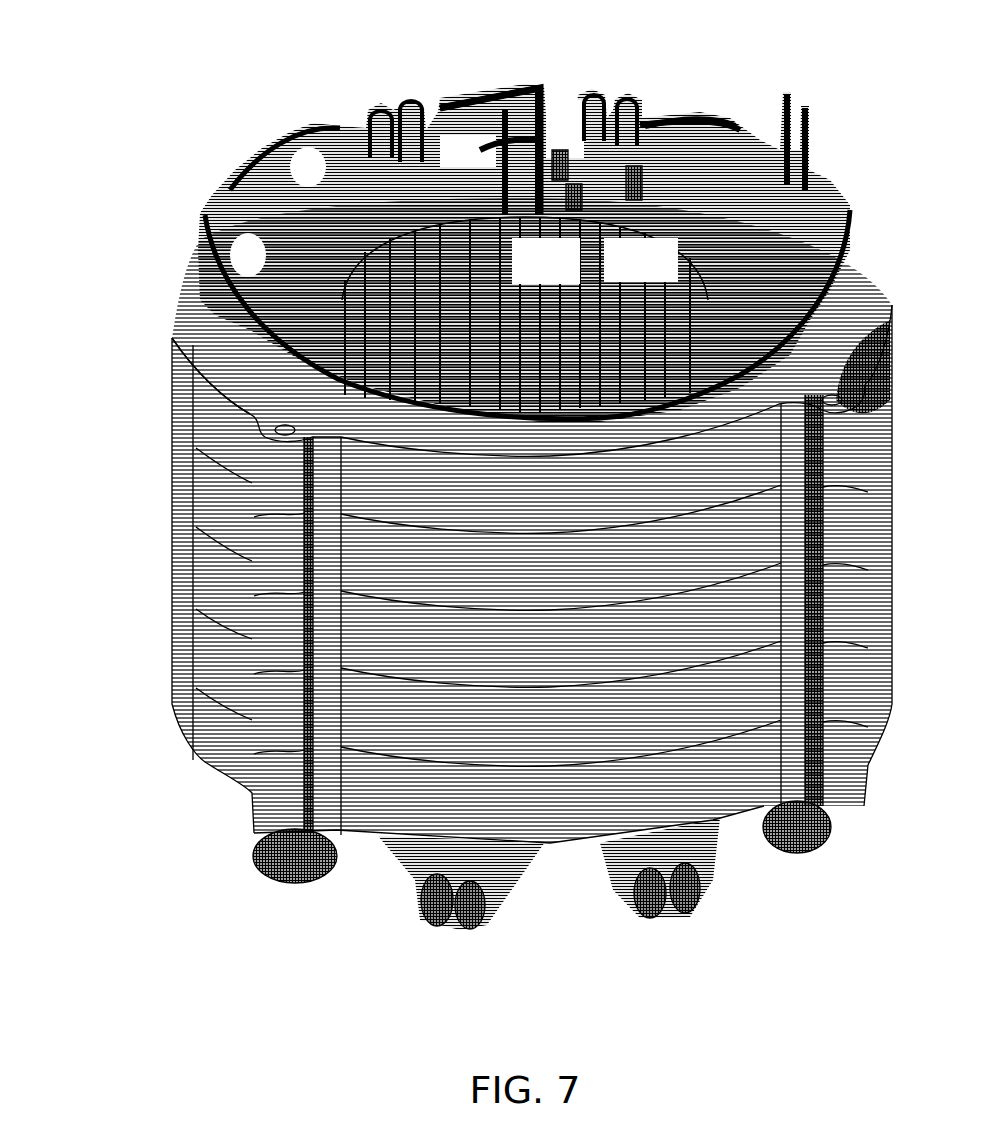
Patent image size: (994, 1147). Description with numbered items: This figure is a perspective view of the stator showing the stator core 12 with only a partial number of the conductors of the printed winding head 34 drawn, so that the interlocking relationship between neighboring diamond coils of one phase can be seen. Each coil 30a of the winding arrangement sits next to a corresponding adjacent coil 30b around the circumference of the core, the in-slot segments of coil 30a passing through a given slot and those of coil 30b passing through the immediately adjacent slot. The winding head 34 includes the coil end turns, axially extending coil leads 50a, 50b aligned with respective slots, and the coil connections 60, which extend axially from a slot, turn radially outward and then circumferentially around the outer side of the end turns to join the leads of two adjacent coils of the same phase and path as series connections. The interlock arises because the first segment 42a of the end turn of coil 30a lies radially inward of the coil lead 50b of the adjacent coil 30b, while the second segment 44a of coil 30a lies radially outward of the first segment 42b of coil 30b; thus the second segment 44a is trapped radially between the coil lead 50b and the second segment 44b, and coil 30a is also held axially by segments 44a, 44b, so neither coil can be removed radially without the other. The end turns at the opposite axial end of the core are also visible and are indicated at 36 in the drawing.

The stator core 12 is at (215, 649).
The coil 30a is at (378, 118).
The corresponding adjacent coil 30b is at (412, 108).
The printed winding head 34 is at (215, 191).
The second end winding 36 is at (728, 894).
The first segment of the end turn of coil 30a 42a is at (560, 141).
The first segment of the end turn of coil 30b 42b is at (575, 185).
The second segment of the end turn of coil 30a 44a is at (634, 165).
The second segment of the end turn of coil 30b 44b is at (677, 120).
The coil lead 50a is at (478, 141).
The coil lead 50b is at (518, 96).
The coil connections 60 is at (170, 362).